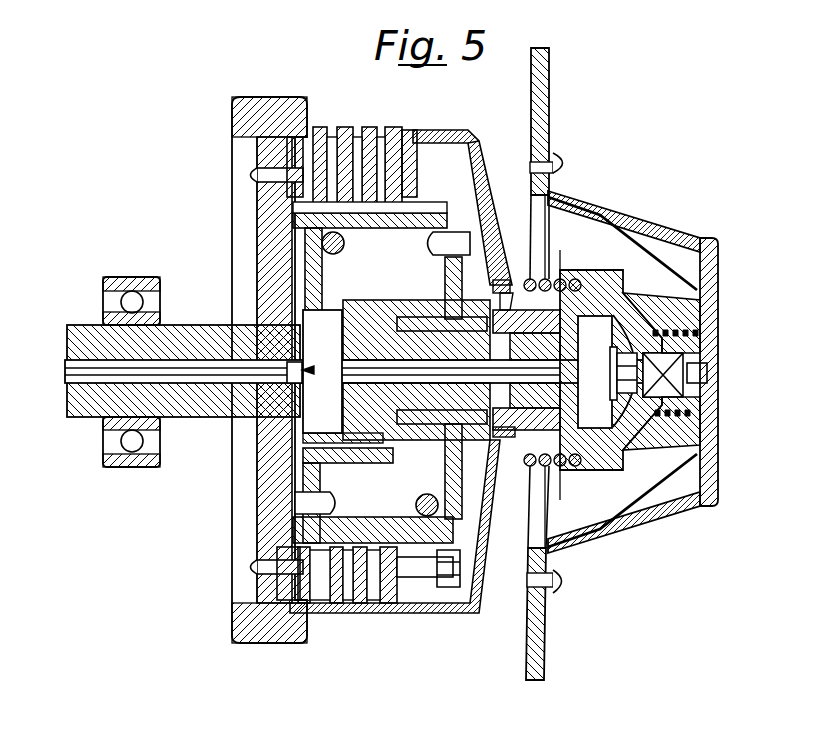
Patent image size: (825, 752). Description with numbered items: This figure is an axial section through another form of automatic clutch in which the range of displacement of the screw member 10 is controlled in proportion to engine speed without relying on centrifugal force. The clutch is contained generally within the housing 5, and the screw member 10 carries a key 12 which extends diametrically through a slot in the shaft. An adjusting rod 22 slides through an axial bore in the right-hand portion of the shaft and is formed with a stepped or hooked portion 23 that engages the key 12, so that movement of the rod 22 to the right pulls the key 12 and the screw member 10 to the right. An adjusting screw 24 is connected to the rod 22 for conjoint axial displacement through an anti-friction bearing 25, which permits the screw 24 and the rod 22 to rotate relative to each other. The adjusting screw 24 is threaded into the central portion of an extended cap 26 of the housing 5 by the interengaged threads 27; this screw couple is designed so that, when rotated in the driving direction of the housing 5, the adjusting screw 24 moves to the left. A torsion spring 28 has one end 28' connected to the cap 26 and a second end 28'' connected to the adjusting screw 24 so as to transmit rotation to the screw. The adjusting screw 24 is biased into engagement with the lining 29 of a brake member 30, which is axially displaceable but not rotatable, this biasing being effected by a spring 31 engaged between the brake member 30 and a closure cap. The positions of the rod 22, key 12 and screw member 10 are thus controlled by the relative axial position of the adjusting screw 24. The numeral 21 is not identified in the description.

The housing 5 is at (218, 395).
The screw member 10 is at (359, 420).
The key 12 is at (320, 327).
The housing flange 21 is at (268, 215).
The adjusting rod 22 is at (533, 445).
The hooked portion 23 is at (300, 345).
The adjusting screw 24 is at (598, 410).
The anti-friction bearing 25 is at (628, 440).
The extended cap 26 is at (500, 243).
The interengaged threads 27 is at (541, 596).
The torsion spring 28 is at (548, 478).
The first end of torsion spring 28' is at (625, 240).
The second end of torsion spring 28'' is at (590, 529).
The lining 29 is at (607, 278).
The brake member 30 is at (637, 310).
The spring 31 is at (683, 333).